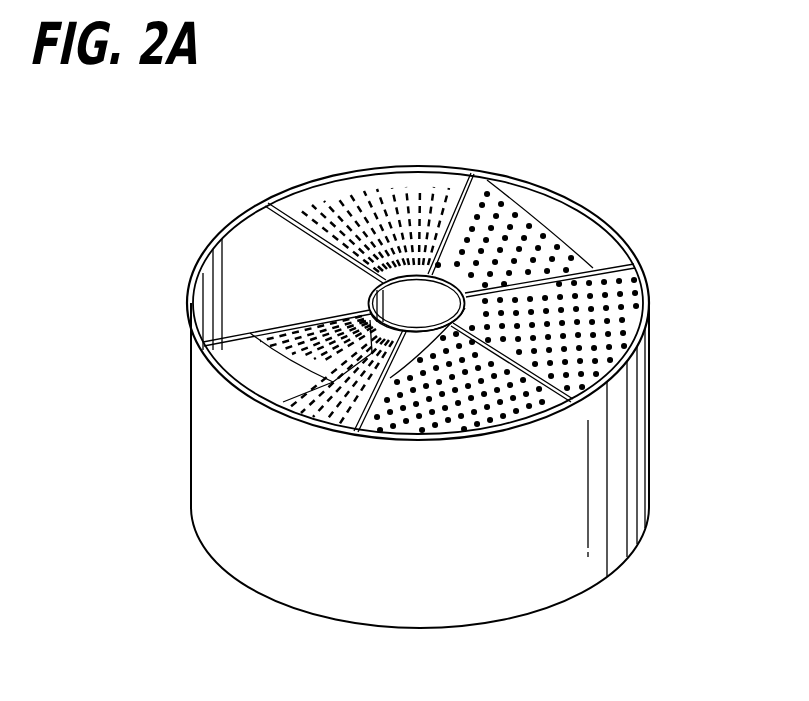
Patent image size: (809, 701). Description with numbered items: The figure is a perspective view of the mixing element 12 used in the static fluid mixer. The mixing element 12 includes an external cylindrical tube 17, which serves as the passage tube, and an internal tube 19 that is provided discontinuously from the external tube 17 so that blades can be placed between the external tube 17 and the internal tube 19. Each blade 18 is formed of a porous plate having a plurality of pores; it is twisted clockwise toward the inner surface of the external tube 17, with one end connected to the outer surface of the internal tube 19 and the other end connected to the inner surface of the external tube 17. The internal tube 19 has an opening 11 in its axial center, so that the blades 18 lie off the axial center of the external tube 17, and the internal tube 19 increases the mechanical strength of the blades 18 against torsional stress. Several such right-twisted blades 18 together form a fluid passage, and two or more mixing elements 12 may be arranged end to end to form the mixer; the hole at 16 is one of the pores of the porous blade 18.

The opening 11 is at (413, 300).
The mixing element 12 is at (570, 131).
The perforation hole 16 is at (600, 348).
The external cylindrical tube 17 is at (585, 473).
The blade 18 is at (595, 314).
The internal tube 19 is at (367, 293).